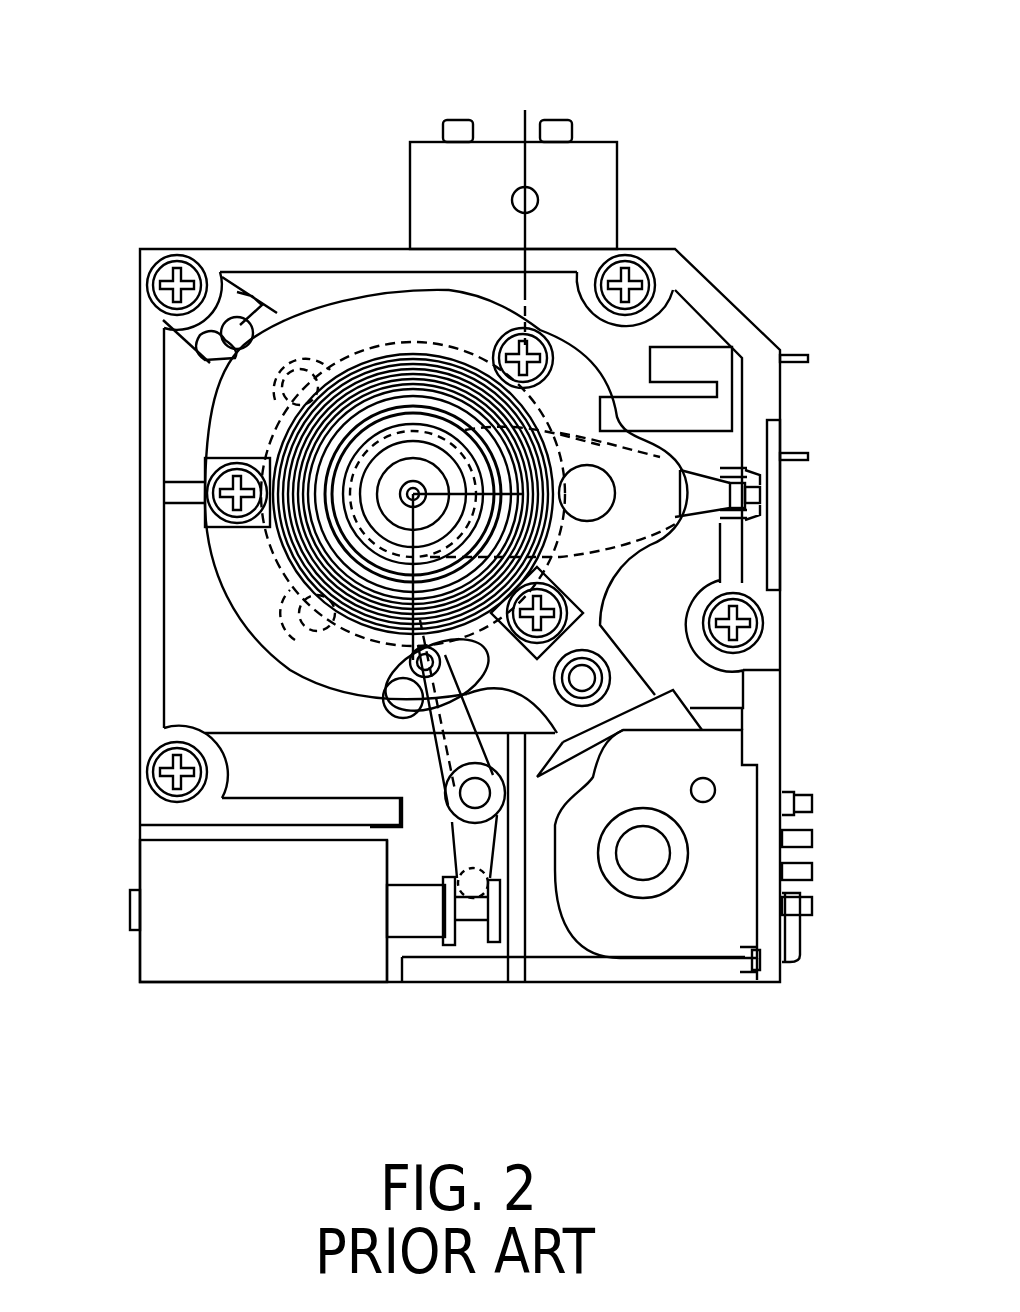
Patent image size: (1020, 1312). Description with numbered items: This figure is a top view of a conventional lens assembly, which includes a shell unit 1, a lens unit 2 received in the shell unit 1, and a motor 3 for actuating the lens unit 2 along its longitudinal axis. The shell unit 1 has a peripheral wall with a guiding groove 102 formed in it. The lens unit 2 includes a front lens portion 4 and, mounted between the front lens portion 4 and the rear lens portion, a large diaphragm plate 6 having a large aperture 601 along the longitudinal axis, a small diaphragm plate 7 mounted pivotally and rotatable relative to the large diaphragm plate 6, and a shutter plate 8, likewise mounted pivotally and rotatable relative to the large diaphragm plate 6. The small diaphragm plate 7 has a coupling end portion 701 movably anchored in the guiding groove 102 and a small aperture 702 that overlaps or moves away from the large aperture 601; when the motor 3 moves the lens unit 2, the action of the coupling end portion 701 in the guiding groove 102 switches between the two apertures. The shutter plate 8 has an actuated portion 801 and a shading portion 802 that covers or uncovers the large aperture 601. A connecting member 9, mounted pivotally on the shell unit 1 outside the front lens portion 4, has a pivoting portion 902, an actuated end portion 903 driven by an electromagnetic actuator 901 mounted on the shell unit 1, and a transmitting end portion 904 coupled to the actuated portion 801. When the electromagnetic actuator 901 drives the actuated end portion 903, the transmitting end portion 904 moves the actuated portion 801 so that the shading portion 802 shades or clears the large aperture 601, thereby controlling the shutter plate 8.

The shell unit 1 is at (703, 304).
The lens unit 2 is at (281, 330).
The motor 3 is at (728, 835).
The front lens portion 4 is at (232, 372).
The large diaphragm plate 6 is at (268, 430).
The small diaphragm plate 7 is at (704, 484).
The shutter plate 8 is at (375, 660).
The connecting member 9 is at (420, 760).
The guiding groove 102 is at (750, 493).
The large aperture 601 is at (385, 505).
The coupling end portion 701 is at (763, 500).
The small aperture 702 is at (412, 492).
The actuated portion 801 is at (400, 700).
The shading portion 802 is at (465, 430).
The electromagnetic actuator 901 is at (172, 963).
The pivoting portion 902 is at (490, 800).
The actuated end portion 903 is at (456, 860).
The transmitting end portion 904 is at (424, 664).